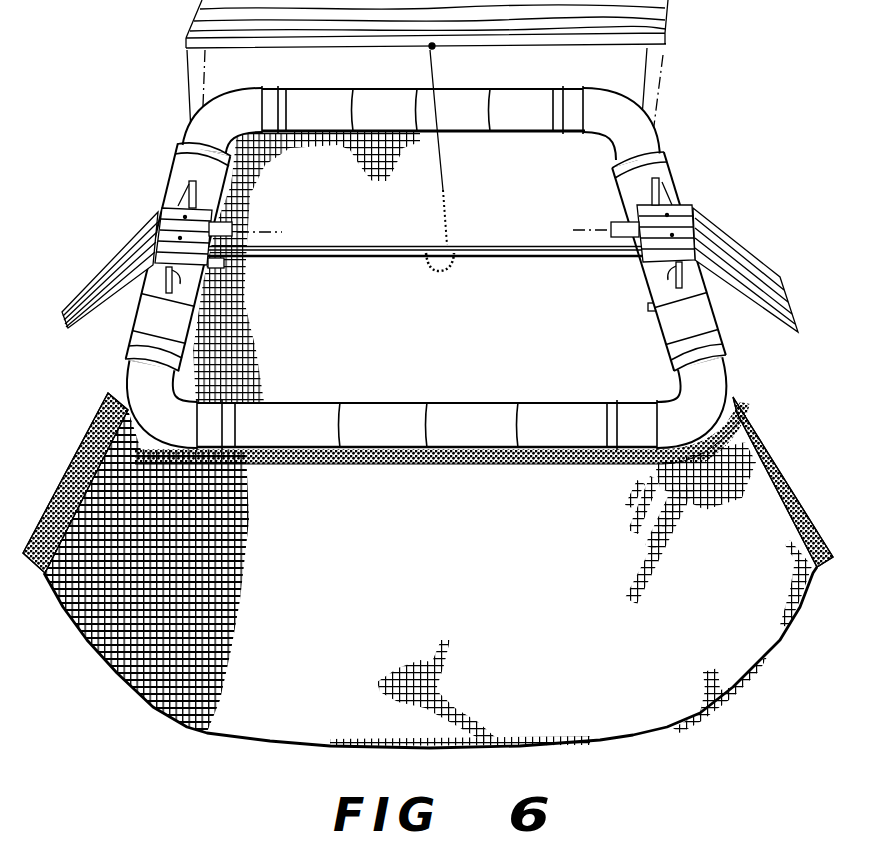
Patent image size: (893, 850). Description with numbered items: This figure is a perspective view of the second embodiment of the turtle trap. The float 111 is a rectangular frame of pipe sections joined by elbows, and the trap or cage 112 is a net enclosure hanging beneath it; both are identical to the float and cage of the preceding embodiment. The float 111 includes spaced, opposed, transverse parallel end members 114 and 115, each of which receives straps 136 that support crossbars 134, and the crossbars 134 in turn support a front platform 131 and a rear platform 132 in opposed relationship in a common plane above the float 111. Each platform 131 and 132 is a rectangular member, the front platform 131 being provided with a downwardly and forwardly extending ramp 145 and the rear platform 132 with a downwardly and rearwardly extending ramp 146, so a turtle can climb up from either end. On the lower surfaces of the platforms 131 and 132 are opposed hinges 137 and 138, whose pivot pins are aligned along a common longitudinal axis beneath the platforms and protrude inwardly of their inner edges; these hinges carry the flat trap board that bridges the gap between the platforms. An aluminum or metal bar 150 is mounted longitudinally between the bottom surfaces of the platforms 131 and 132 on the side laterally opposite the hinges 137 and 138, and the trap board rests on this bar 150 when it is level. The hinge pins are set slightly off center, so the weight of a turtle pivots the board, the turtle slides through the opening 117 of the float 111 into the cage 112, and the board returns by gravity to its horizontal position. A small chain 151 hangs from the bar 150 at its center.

The float 111 is at (471, 96).
The trap or cage 112 is at (100, 452).
The end member 114 is at (185, 194).
The end member 115 is at (660, 170).
The opening 117 is at (378, 143).
The platform 131 is at (224, 266).
The platform 132 is at (677, 222).
The crossbar 134 is at (232, 293).
The strap 136 is at (266, 180).
The hinge 137 is at (229, 226).
The hinge 138 is at (614, 222).
The ramp 145 is at (100, 262).
The ramp 146 is at (733, 247).
The metal bar 150 is at (480, 247).
The chain 151 is at (441, 272).